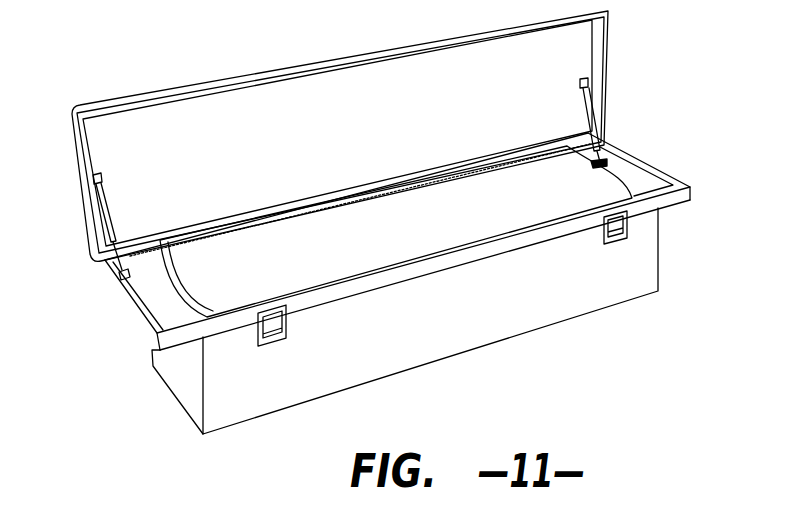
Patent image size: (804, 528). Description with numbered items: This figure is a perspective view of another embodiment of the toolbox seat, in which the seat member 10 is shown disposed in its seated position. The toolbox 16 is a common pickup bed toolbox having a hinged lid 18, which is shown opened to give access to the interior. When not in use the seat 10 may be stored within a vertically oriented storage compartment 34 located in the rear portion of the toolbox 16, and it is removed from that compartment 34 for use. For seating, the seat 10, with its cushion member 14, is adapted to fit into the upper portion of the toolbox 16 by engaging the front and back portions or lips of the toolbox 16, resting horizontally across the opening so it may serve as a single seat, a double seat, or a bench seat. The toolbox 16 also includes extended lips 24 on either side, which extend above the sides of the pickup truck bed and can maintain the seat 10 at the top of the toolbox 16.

The seat member 10 is at (377, 222).
The cushion member 14 is at (283, 274).
The toolbox 16 is at (603, 291).
The lid 18 is at (347, 90).
The extended lips 24 is at (695, 192).
The storage compartment 34 is at (150, 250).